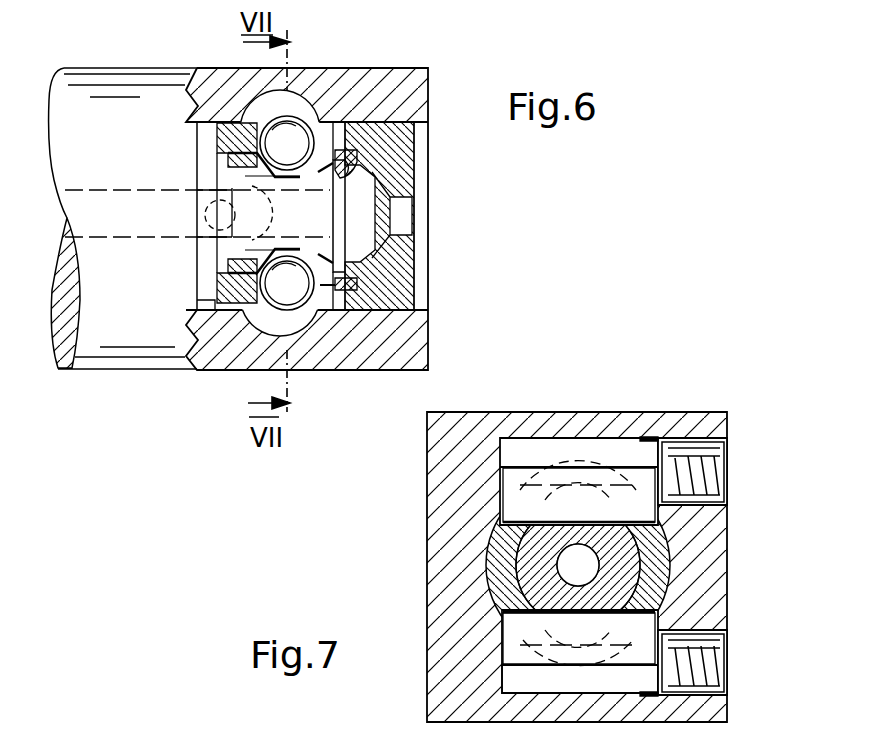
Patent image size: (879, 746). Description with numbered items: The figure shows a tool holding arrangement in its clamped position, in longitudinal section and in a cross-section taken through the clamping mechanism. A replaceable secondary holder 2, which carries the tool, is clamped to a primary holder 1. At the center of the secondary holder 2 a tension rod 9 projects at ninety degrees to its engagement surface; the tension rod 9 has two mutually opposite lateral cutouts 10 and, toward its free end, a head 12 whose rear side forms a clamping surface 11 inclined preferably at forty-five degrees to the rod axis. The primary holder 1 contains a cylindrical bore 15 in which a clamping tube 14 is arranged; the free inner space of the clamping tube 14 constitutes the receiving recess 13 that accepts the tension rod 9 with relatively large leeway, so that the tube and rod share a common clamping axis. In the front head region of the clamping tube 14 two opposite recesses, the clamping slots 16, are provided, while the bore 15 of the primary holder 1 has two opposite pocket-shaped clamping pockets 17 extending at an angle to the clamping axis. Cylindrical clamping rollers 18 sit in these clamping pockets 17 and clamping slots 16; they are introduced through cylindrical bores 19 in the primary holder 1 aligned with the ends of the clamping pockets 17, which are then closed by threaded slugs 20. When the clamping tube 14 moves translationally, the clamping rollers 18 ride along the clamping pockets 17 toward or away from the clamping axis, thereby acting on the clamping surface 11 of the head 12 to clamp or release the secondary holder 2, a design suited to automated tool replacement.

In FIG. 6, the primary holder 1 is at (315, 77).
In FIG. 7, the primary holder 1 is at (460, 423).
In FIG. 6, the secondary holder 2 is at (80, 77).
In FIG. 6, the tension rod 9 is at (272, 205).
In FIG. 7, the tension rod 9 is at (556, 530).
In FIG. 6, the lateral cutouts 10 is at (197, 313).
In FIG. 7, the lateral cutouts 10 is at (545, 600).
In FIG. 6, the clamping surface 11 is at (332, 163).
In FIG. 6, the head 12 is at (357, 167).
In FIG. 6, the receiving recess 13 is at (347, 292).
In FIG. 6, the clamping tube 14 is at (398, 270).
In FIG. 7, the clamping tube 14 is at (492, 560).
In FIG. 6, the bore 15 is at (433, 122).
In FIG. 7, the bore 15 is at (521, 524).
In FIG. 6, the clamping slots 16 is at (212, 173).
In FIG. 7, the clamping slots 16 is at (648, 523).
In FIG. 6, the clamping pockets 17 is at (262, 107).
In FIG. 7, the clamping pockets 17 is at (525, 680).
In FIG. 6, the clamping rollers 18 is at (289, 292).
In FIG. 7, the clamping rollers 18 is at (512, 648).
In FIG. 7, the cylindrical bores 19 is at (663, 437).
In FIG. 7, the threaded slugs 20 is at (708, 458).